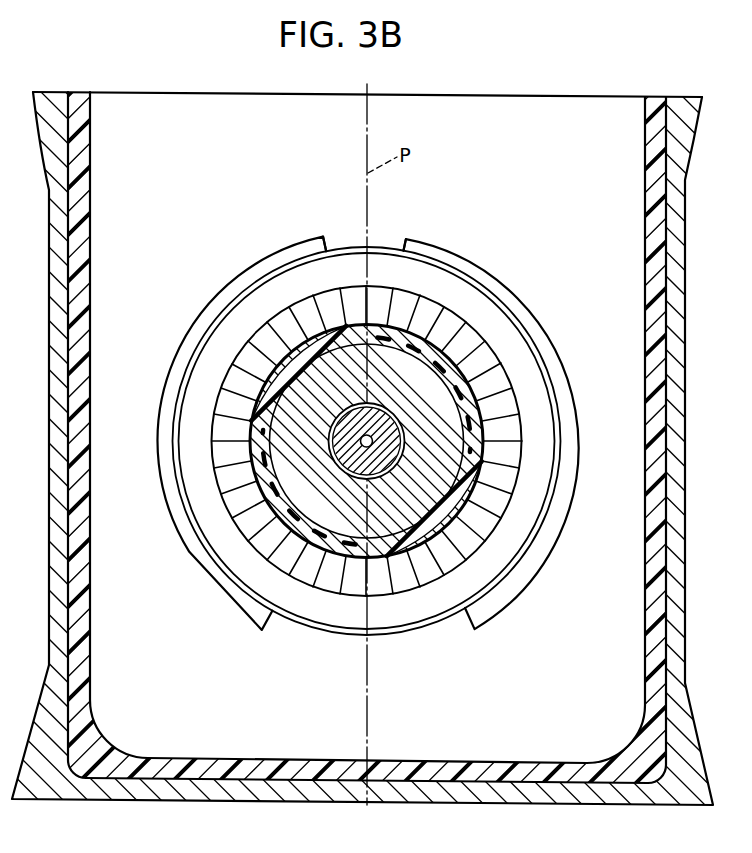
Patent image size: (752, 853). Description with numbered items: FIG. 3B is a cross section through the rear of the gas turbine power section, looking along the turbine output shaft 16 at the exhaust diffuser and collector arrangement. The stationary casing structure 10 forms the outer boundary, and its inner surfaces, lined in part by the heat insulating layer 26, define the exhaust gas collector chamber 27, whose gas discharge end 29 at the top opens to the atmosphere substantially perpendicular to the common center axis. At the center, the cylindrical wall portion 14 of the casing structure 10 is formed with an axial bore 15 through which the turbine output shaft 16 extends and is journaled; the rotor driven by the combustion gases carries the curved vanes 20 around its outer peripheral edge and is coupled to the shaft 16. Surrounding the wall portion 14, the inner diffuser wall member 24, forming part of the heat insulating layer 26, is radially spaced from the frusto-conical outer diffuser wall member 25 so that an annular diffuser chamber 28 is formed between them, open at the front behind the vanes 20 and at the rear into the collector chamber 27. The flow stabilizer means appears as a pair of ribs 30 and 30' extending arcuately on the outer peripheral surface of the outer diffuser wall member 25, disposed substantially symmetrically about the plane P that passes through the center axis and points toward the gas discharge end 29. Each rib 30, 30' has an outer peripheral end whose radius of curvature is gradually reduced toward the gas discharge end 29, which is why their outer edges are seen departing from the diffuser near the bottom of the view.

The casing structure 10 is at (318, 805).
The cylindrical wall portion 14 is at (444, 503).
The axial bore 15 is at (338, 461).
The turbine output shaft 16 is at (346, 421).
The curved vanes 20 is at (276, 562).
The inner diffuser wall member 24 is at (240, 351).
The outer diffuser wall member 25 is at (319, 241).
The heat insulating layer 26 is at (572, 763).
The exhaust gas collector chamber 27 is at (552, 180).
The diffuser chamber 28 is at (394, 263).
The gas discharge end 29 is at (581, 92).
The rib 30 is at (359, 436).
The rib 30' is at (491, 434).